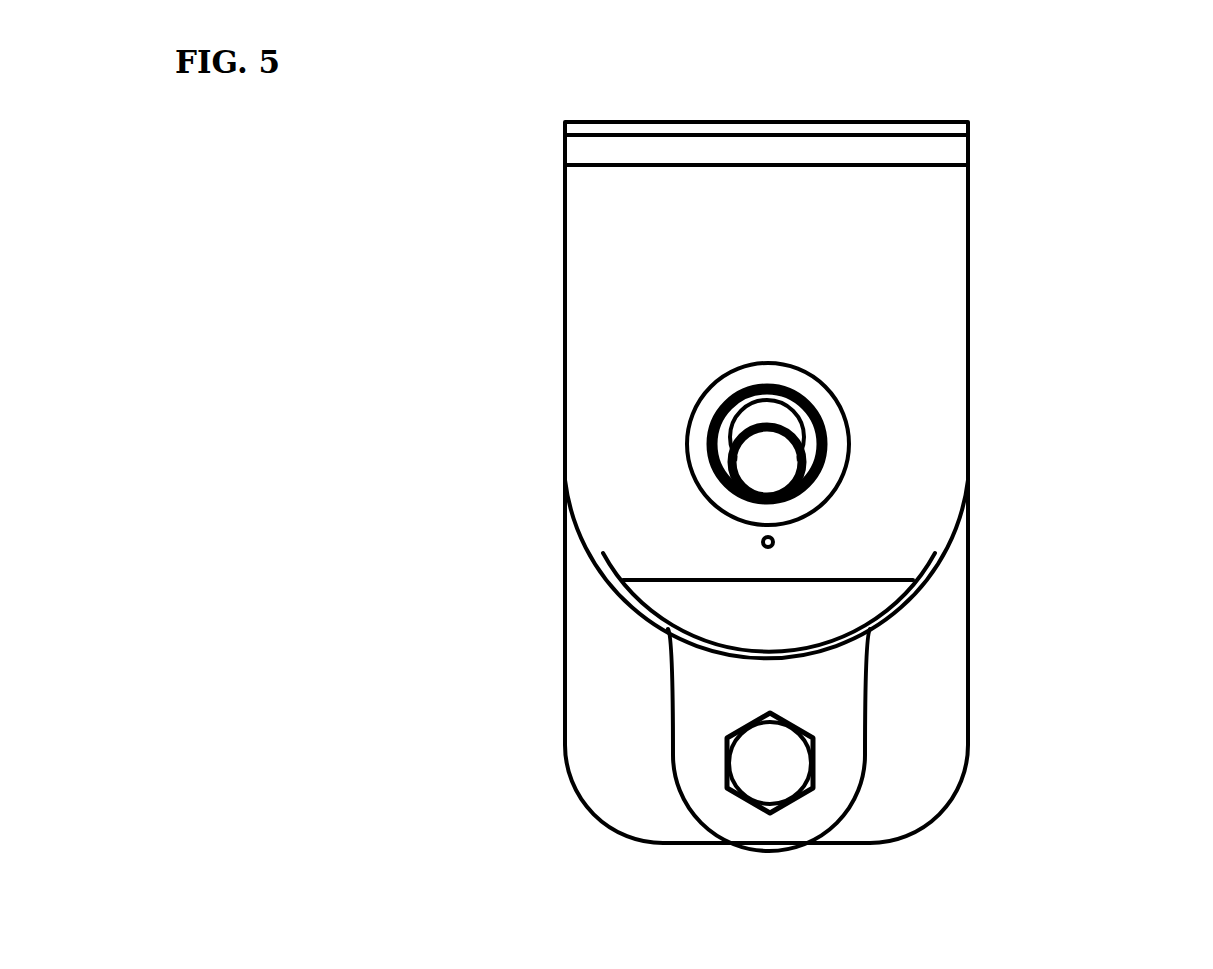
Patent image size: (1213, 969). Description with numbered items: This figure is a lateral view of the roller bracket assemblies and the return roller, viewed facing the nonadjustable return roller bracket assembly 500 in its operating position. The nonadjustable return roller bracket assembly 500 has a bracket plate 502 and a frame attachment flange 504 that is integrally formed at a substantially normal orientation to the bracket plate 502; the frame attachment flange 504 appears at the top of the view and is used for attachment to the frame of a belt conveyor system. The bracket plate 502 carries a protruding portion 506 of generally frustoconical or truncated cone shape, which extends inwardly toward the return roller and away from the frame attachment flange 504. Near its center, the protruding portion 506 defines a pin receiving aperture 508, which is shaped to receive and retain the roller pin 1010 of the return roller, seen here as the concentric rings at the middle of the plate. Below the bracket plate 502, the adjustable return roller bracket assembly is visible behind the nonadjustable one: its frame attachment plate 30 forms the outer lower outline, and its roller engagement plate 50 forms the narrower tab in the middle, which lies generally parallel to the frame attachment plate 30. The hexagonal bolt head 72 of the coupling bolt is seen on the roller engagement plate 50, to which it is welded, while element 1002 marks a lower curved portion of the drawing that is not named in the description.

The nonadjustable return roller bracket assembly 500 is at (968, 260).
The bracket plate 502 is at (933, 387).
The frame attachment flange 504 is at (798, 128).
The protruding portion 506 is at (812, 450).
The pin receiving aperture 508 is at (748, 418).
The roller pin 1010 is at (760, 472).
The bracket 1002 is at (843, 605).
The frame attachment plate 30 is at (943, 717).
The roller engagement plate 50 is at (703, 805).
The bolt head 72 is at (778, 783).